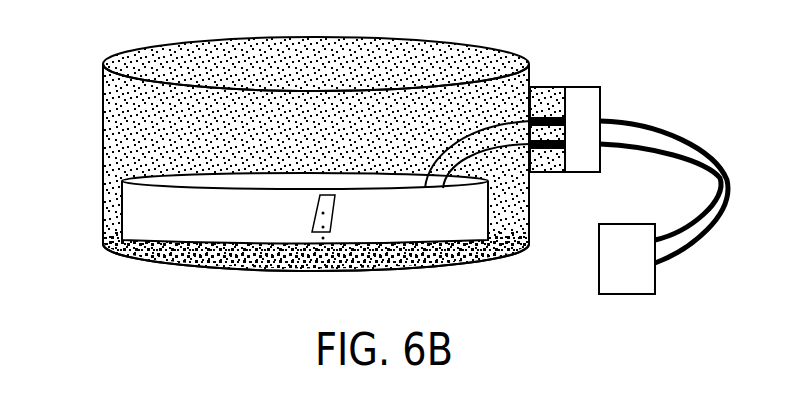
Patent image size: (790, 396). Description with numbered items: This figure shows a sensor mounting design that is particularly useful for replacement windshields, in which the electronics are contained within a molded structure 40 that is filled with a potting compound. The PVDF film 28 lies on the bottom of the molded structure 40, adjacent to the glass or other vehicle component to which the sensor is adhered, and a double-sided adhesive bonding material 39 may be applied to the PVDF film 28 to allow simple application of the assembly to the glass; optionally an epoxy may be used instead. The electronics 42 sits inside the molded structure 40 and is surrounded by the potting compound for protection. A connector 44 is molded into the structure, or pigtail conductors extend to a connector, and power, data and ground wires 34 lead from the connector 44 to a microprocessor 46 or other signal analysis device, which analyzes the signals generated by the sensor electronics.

The molded structure 40 is at (128, 61).
The electronics 42 is at (122, 181).
The PVDF film 28 is at (120, 247).
The double-sided adhesive bonding material 39 is at (316, 250).
The connector 44 is at (550, 92).
The power/data/ground wires 34 is at (651, 130).
The microprocessor 46 is at (599, 276).